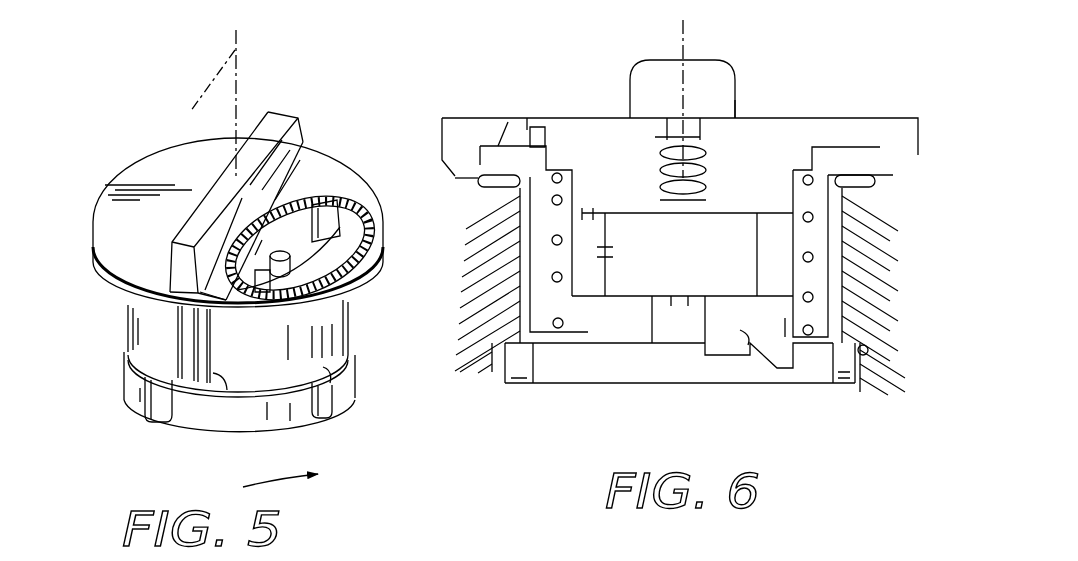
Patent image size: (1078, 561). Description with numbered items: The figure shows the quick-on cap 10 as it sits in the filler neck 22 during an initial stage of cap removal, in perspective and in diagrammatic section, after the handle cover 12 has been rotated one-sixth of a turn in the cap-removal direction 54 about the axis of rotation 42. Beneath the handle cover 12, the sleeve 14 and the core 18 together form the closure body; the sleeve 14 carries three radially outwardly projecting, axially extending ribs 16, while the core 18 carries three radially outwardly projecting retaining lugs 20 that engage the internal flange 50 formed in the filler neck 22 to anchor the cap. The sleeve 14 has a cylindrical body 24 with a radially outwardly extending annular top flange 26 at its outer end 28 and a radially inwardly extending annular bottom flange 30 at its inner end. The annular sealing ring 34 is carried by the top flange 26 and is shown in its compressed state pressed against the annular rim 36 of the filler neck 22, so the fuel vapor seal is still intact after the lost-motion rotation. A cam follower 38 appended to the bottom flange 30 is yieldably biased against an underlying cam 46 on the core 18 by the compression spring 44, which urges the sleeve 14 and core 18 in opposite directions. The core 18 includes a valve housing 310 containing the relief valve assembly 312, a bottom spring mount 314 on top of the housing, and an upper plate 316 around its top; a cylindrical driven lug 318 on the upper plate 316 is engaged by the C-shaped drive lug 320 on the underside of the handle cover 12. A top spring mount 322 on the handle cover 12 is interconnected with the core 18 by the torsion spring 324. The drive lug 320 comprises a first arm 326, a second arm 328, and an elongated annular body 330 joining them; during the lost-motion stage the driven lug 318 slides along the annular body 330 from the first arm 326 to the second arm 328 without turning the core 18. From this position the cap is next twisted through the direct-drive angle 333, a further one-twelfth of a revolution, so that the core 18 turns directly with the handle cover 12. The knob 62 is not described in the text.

In FIG. 5, the quick-on cap 10 is at (90, 172).
In FIG. 6, the quick-on cap 10 is at (830, 98).
In FIG. 5, the handle cover 12 is at (250, 98).
In FIG. 6, the handle cover 12 is at (742, 98).
In FIG. 5, the sleeve 14 is at (122, 335).
In FIG. 6, the sleeve 14 is at (832, 295).
In FIG. 5, the ribs 16 is at (208, 378).
In FIG. 5, the core 18 is at (122, 393).
In FIG. 5, the retaining lugs 20 is at (153, 413).
In FIG. 6, the retaining lugs 20 is at (527, 388).
In FIG. 6, the filler neck 22 is at (865, 388).
In FIG. 6, the cylindrical body 24 is at (828, 240).
In FIG. 6, the annular top flange 26 is at (485, 150).
In FIG. 6, the outer end 28 is at (855, 140).
In FIG. 6, the annular bottom flange 30 is at (797, 335).
In FIG. 6, the annular sealing ring 34 is at (505, 190).
In FIG. 6, the annular rim 36 is at (472, 182).
In FIG. 6, the cam follower 38 is at (775, 362).
In FIG. 6, the axis of rotation 42 is at (690, 42).
In FIG. 6, the compression spring 44 is at (565, 325).
In FIG. 6, the cam 46 is at (750, 340).
In FIG. 6, the internal flange 50 is at (497, 345).
In FIG. 5, the cap-removal direction 54 is at (283, 470).
In FIG. 5, the handle 62 is at (278, 125).
In FIG. 6, the handle 62 is at (655, 78).
In FIG. 6, the valve housing 310 is at (620, 175).
In FIG. 6, the relief valve assembly 312 is at (745, 225).
In FIG. 6, the bottom spring mount 314 is at (662, 202).
In FIG. 5, the upper plate 316 is at (352, 235).
In FIG. 6, the upper plate 316 is at (498, 146).
In FIG. 5, the cylindrical driven lug 318 is at (284, 252).
In FIG. 6, the cylindrical driven lug 318 is at (550, 135).
In FIG. 5, the C-shaped drive lug 320 is at (357, 262).
In FIG. 6, the top spring mount 322 is at (703, 128).
In FIG. 6, the torsion spring 324 is at (708, 166).
In FIG. 5, the first arm 326 is at (333, 192).
In FIG. 5, the second arm 328 is at (262, 262).
In FIG. 5, the elongated annular body 330 is at (302, 300).
In FIG. 5, the direct-drive angle 333 is at (233, 93).